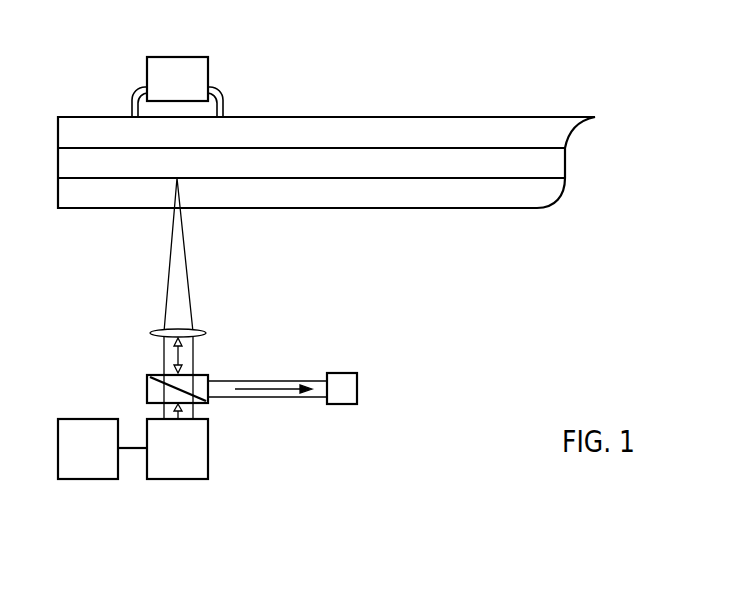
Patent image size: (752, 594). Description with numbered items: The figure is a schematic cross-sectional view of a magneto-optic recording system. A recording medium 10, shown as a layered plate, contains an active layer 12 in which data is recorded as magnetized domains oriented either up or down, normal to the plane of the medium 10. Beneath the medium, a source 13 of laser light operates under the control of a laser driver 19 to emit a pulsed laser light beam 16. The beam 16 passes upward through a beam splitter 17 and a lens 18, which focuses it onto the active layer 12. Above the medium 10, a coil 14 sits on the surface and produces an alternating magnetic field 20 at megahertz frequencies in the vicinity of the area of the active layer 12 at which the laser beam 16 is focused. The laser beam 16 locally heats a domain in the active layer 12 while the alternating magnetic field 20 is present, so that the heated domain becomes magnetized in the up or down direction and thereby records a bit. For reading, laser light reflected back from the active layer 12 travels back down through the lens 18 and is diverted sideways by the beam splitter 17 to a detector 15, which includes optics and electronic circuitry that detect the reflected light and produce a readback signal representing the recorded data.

The recording medium 10 is at (434, 212).
The active layer 12 is at (362, 160).
The source of laser light 13 is at (192, 449).
The coil 14 is at (163, 55).
The detector 15 is at (347, 389).
The pulsed laser light beam 16 is at (163, 283).
The beam splitter 17 is at (160, 381).
The lens 18 is at (152, 330).
The laser driver 19 is at (80, 463).
The alternating magnetic field 20 is at (223, 101).